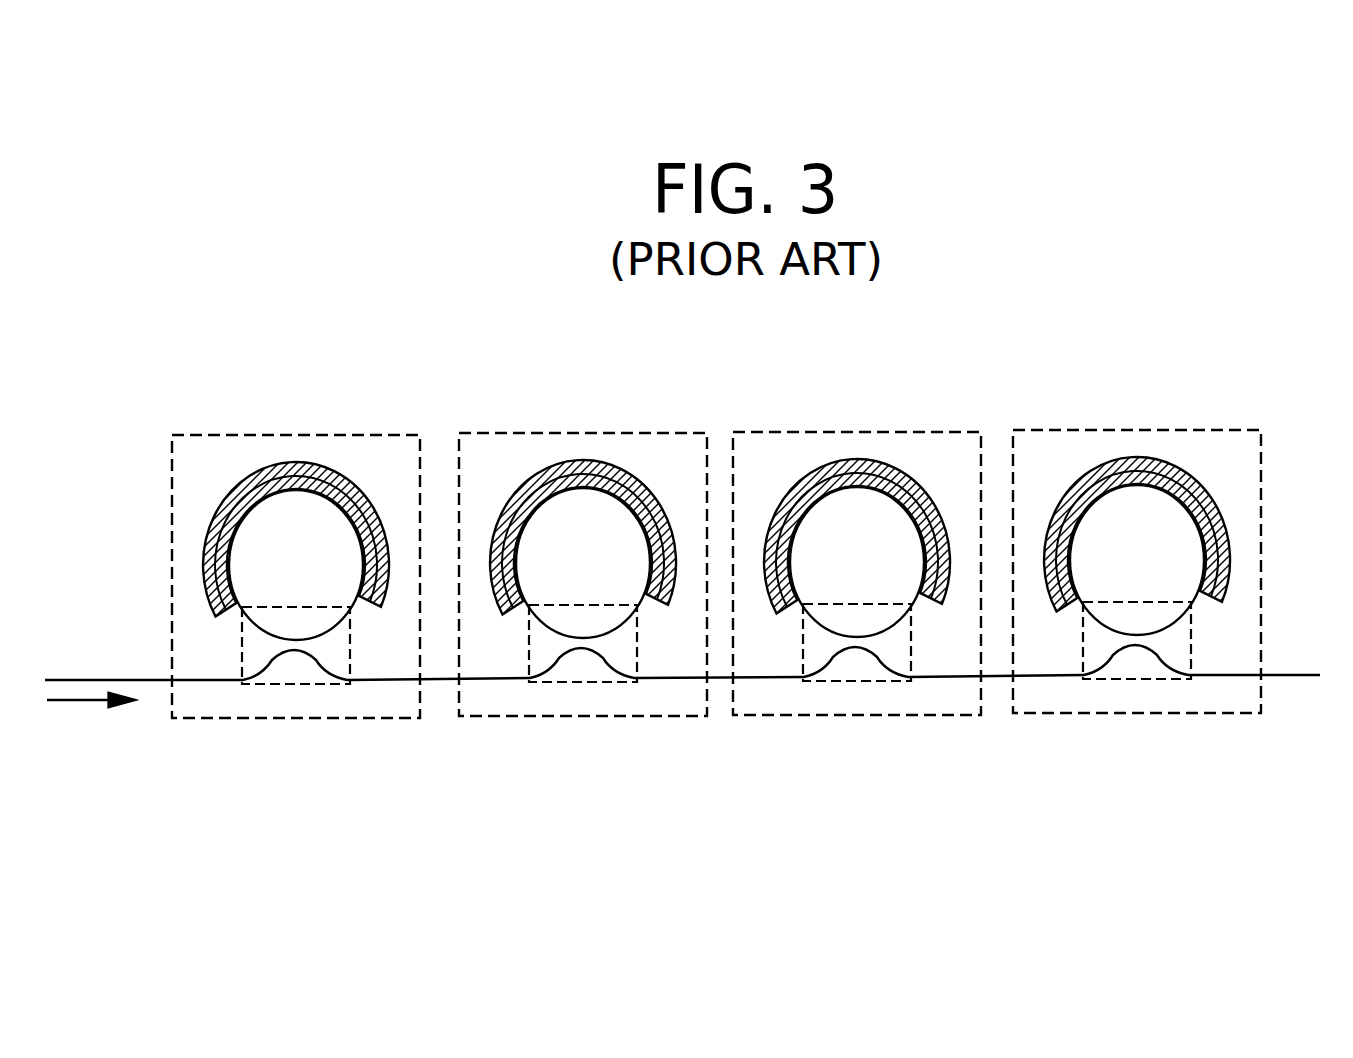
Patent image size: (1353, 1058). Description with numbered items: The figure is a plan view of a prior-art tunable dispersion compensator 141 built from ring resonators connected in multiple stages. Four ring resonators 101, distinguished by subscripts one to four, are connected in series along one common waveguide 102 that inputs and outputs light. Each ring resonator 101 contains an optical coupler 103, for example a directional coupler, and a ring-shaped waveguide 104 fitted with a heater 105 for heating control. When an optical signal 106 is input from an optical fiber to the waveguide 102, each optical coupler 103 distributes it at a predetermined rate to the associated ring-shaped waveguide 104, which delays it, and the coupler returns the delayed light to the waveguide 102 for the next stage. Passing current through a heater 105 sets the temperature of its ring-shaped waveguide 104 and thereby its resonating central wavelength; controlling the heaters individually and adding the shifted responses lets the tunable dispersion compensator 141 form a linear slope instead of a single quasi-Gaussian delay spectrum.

The tunable dispersion compensator 141 is at (1266, 362).
The ring resonator 101 is at (1162, 362).
The waveguide 102 is at (97, 678).
The optical coupler 103 is at (1130, 681).
The ring-shaped waveguide 104 is at (716, 562).
The heater 105 is at (1075, 488).
The optical signal 106 is at (83, 704).